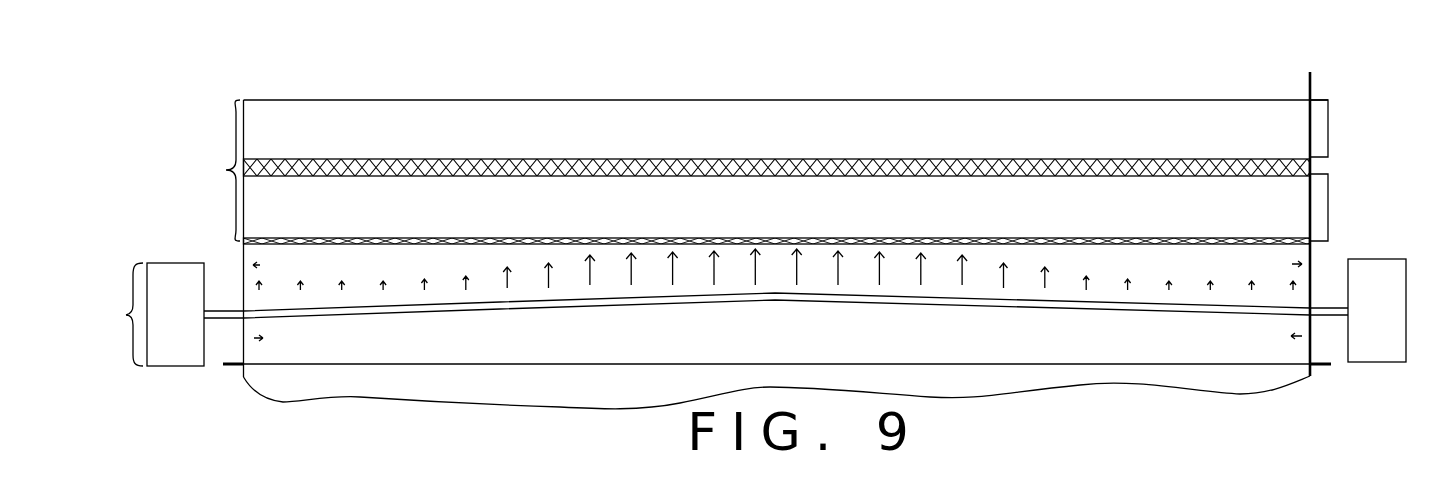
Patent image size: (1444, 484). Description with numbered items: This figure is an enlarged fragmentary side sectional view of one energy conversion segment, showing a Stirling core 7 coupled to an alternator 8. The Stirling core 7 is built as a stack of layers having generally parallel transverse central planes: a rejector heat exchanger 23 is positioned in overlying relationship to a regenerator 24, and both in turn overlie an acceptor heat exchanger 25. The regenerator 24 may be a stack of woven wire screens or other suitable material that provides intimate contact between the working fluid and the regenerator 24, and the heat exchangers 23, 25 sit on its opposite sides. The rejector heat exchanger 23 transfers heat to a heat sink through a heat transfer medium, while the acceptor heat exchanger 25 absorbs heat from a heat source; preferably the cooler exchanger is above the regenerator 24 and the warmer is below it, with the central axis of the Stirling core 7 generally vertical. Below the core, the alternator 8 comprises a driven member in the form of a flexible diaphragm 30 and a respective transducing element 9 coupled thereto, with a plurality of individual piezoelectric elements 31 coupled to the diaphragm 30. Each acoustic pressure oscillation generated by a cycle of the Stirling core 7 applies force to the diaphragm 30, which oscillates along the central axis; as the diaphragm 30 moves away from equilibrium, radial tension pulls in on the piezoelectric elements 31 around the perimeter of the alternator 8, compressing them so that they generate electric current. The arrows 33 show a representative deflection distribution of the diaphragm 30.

The Stirling core 7 is at (226, 170).
The alternator 8 is at (127, 315).
The transducing element 9 is at (175, 263).
The rejector heat exchanger 23 is at (1223, 99).
The regenerator 24 is at (1310, 167).
The acceptor heat exchanger 25 is at (1328, 217).
The diaphragm 30 is at (565, 308).
The piezoelectric elements 31 is at (192, 357).
The arrows 33 is at (427, 283).